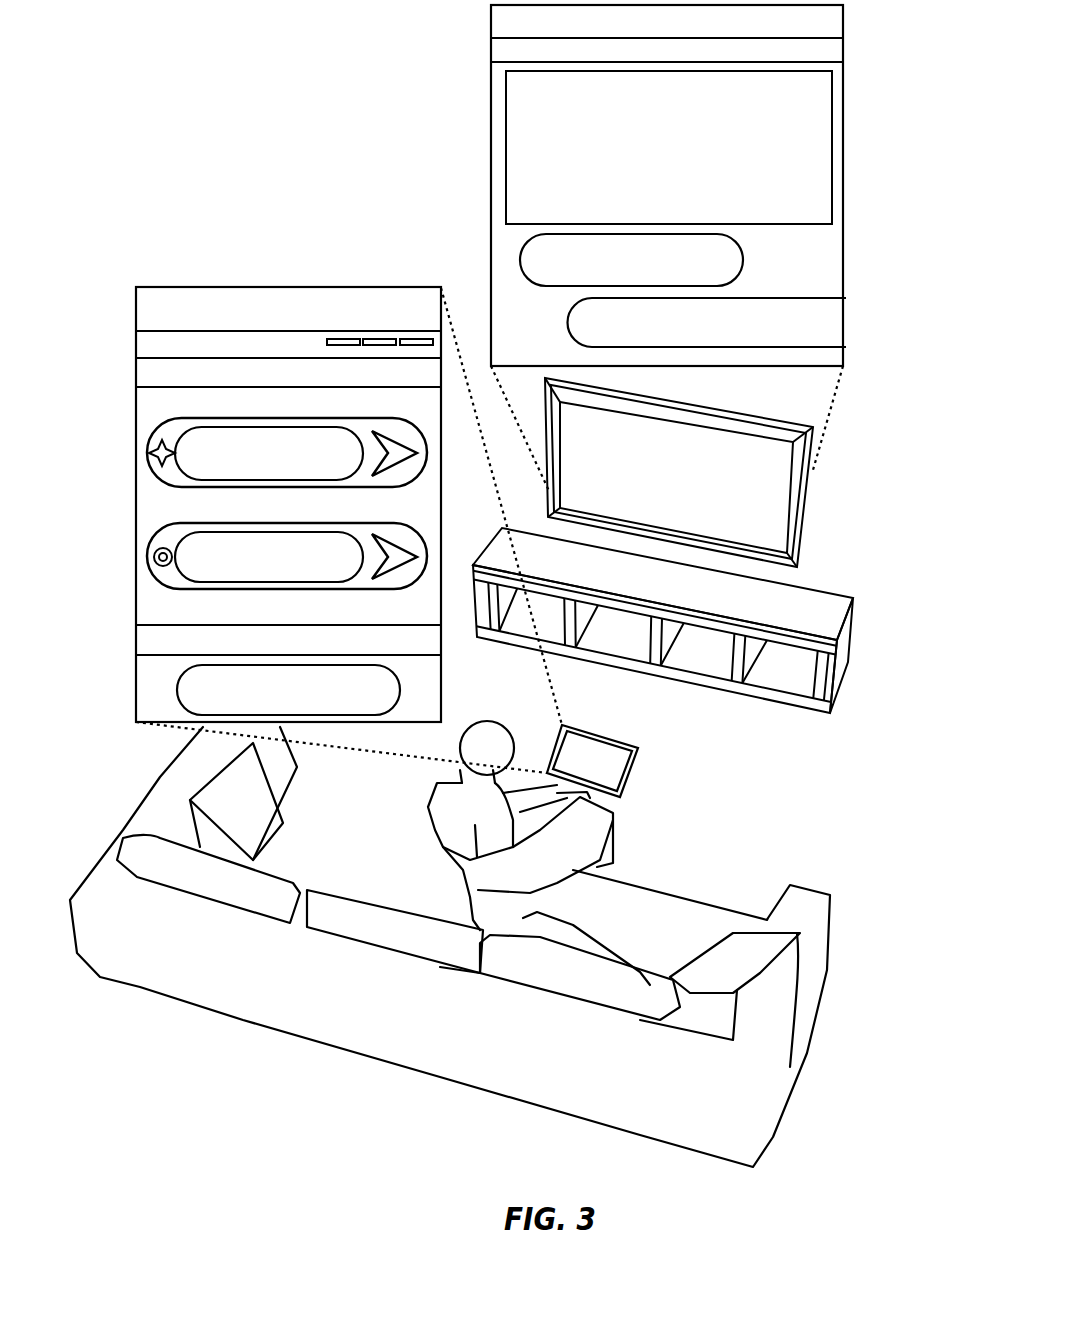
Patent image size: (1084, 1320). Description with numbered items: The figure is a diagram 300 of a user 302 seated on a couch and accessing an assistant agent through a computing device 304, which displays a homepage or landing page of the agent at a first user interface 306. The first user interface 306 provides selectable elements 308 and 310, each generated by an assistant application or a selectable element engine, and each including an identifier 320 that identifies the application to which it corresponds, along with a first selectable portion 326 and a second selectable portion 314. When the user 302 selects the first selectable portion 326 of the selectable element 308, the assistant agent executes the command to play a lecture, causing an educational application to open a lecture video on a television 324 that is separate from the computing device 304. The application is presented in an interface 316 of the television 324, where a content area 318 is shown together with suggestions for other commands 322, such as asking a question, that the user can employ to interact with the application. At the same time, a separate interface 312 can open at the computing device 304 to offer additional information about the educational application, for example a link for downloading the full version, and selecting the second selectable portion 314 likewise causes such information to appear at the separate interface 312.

The diagram 300 is at (193, 92).
The user 302 is at (520, 825).
The computing device 304 is at (640, 762).
The first user interface 306 is at (314, 504).
The selectable element 308 is at (264, 453).
The selectable element 310 is at (430, 548).
The separate interface 312 is at (430, 682).
The second selectable portion 314 is at (404, 578).
The interface 316 is at (714, 185).
The content display area 318 is at (669, 147).
The identifier 320 is at (158, 470).
The other commands 322 is at (745, 250).
The television 324 is at (679, 472).
The first selectable portion 326 is at (178, 458).